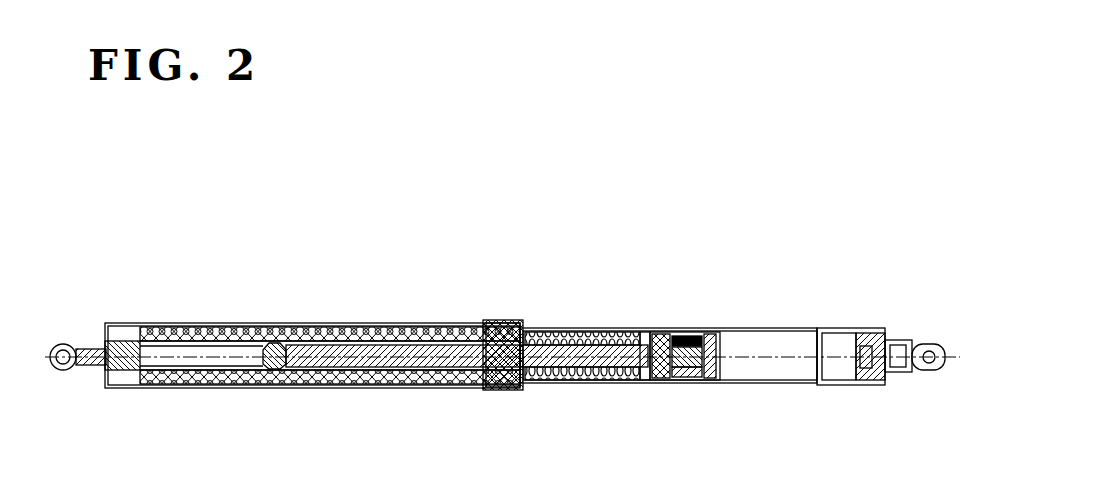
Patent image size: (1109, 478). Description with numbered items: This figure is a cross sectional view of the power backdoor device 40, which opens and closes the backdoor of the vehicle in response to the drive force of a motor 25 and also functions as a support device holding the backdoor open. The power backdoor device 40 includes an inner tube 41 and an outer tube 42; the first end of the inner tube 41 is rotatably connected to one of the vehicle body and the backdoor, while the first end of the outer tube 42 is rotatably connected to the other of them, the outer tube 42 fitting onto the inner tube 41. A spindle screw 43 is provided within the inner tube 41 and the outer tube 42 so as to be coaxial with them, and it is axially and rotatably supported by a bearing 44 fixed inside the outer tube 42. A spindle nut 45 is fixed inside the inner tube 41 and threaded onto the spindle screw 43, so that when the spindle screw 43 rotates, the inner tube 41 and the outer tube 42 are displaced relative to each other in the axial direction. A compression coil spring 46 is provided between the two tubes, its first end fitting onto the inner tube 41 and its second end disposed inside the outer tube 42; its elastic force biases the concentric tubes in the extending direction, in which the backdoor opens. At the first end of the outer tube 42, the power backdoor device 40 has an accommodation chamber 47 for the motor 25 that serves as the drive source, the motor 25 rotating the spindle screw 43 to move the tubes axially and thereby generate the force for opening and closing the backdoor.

The power backdoor device 40 is at (259, 178).
The motor 25 is at (763, 330).
The inner tube 41 is at (214, 334).
The outer tube 42 is at (580, 329).
The spindle screw 43 is at (371, 369).
The bearing 44 is at (642, 386).
The spindle nut 45 is at (517, 391).
The compression coil spring 46 is at (181, 390).
The accommodation chamber 47 is at (760, 379).